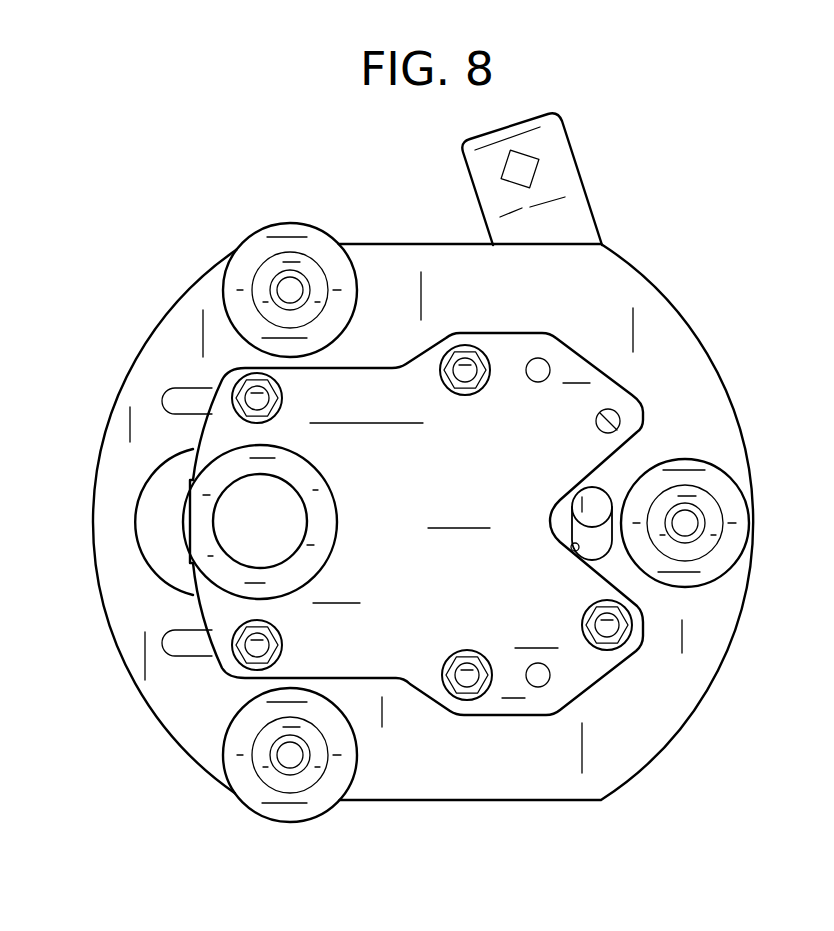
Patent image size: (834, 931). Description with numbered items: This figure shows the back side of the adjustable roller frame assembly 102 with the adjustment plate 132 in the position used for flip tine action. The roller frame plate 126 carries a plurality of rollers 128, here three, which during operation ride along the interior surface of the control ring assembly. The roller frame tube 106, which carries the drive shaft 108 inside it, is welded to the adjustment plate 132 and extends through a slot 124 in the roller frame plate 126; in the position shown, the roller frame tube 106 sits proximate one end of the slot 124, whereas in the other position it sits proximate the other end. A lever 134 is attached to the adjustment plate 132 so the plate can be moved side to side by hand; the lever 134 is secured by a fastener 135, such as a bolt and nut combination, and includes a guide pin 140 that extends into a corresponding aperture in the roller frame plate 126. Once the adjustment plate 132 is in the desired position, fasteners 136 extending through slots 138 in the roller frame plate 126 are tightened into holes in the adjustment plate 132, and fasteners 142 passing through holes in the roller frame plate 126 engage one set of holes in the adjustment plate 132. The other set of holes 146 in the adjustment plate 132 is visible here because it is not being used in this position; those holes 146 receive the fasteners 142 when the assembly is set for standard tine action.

The adjustable roller frame assembly 102 is at (423, 188).
The roller frame tube 106 is at (313, 553).
The drive shaft 108 is at (275, 508).
The slot 124 is at (108, 547).
The roller frame plate 126 is at (640, 727).
The rollers 128 is at (283, 238).
The adjustment plate 132 is at (498, 488).
The lever 134 is at (573, 198).
The fastener 135 is at (607, 628).
The fasteners 136 is at (258, 402).
The slots 138 is at (183, 390).
The guide pin 140 is at (592, 508).
The fasteners 142 is at (472, 381).
The holes 146 is at (538, 382).